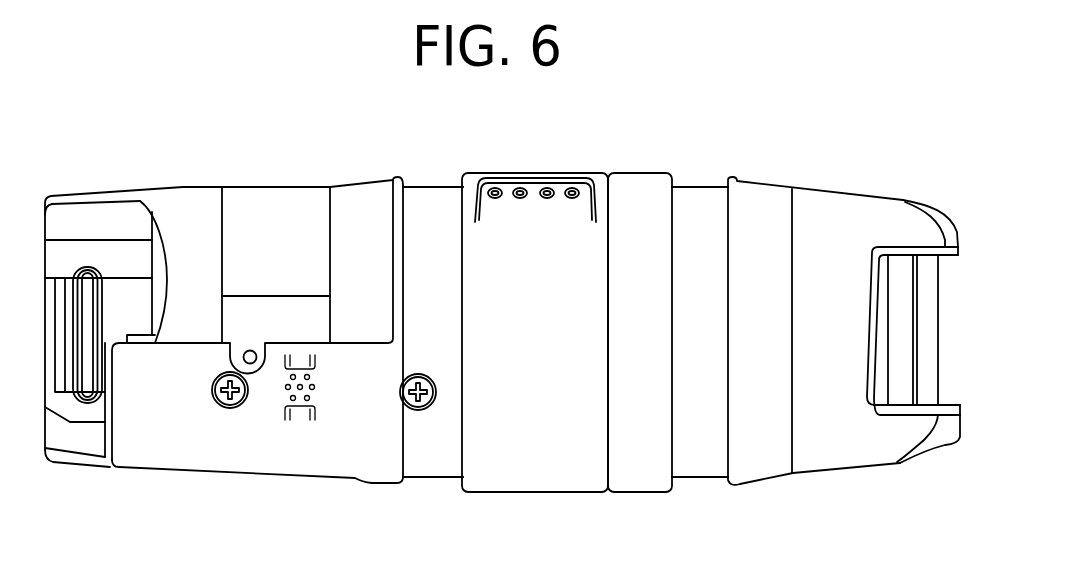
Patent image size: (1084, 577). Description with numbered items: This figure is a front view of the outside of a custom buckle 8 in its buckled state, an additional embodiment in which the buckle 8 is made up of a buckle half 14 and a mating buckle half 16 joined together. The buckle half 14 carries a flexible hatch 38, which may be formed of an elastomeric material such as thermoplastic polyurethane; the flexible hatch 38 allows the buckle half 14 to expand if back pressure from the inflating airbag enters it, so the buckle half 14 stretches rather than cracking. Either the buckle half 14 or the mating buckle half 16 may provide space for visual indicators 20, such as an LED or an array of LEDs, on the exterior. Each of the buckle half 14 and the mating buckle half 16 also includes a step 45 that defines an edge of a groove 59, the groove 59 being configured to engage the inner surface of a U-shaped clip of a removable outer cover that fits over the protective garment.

The buckle 8 is at (784, 150).
The buckle half 14 is at (348, 483).
The mating buckle half 16 is at (832, 478).
The visual indicators 20 is at (541, 172).
The flexible hatch 38 is at (247, 187).
The step 45 is at (408, 182).
The groove 59 is at (432, 216).